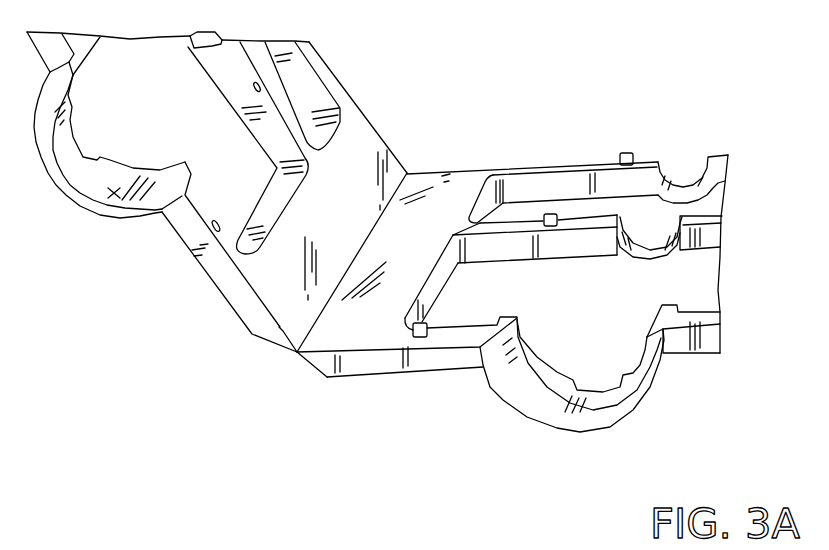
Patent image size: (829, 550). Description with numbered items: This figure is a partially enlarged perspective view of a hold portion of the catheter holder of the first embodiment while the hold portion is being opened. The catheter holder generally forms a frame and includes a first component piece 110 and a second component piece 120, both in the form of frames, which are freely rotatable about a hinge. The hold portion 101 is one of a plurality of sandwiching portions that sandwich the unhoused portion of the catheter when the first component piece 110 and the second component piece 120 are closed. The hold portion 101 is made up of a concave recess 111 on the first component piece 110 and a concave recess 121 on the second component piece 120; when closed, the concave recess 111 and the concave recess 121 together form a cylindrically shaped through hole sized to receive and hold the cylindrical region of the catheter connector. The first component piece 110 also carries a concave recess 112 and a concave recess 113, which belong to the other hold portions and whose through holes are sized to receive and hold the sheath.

The hold portion 101 is at (377, 280).
The first component piece 110 is at (487, 168).
The concave recess 111 is at (513, 379).
The concave recess 112 is at (653, 238).
The concave recess 113 is at (681, 175).
The second component piece 120 is at (370, 113).
The concave recess 121 is at (117, 190).